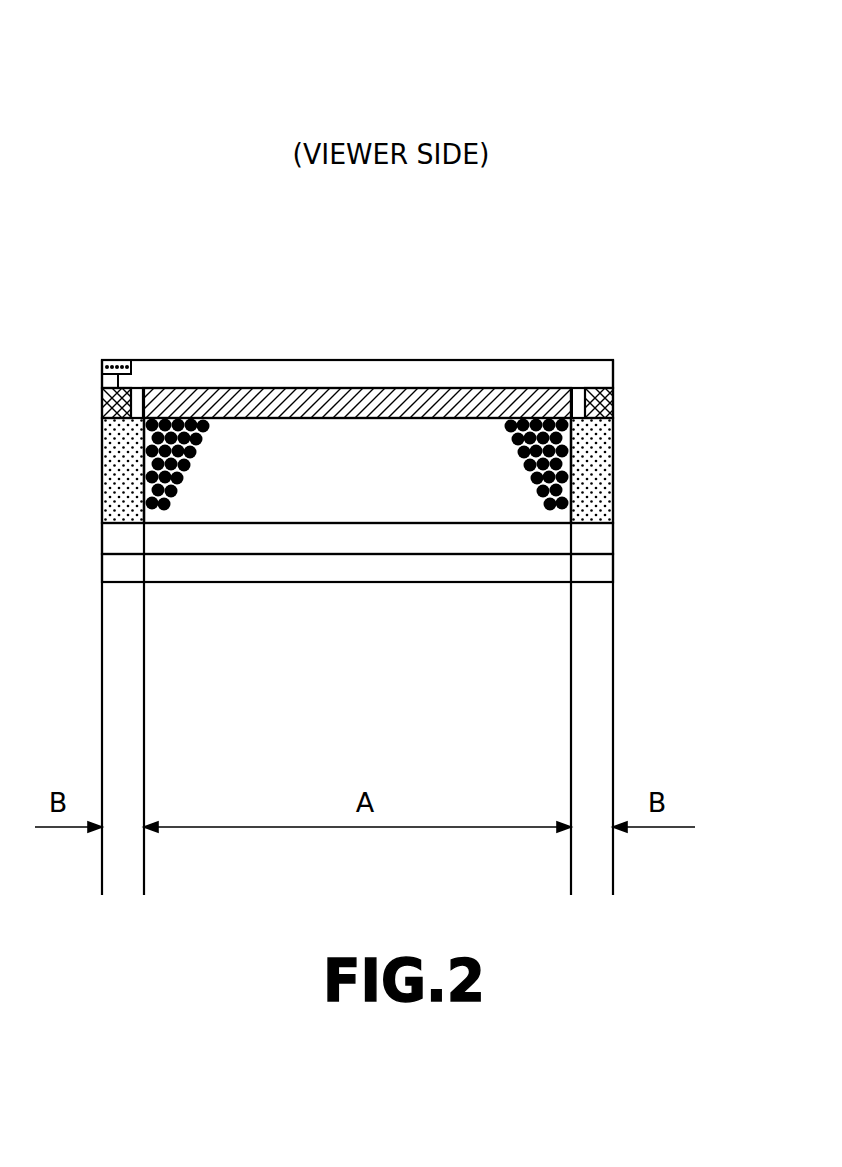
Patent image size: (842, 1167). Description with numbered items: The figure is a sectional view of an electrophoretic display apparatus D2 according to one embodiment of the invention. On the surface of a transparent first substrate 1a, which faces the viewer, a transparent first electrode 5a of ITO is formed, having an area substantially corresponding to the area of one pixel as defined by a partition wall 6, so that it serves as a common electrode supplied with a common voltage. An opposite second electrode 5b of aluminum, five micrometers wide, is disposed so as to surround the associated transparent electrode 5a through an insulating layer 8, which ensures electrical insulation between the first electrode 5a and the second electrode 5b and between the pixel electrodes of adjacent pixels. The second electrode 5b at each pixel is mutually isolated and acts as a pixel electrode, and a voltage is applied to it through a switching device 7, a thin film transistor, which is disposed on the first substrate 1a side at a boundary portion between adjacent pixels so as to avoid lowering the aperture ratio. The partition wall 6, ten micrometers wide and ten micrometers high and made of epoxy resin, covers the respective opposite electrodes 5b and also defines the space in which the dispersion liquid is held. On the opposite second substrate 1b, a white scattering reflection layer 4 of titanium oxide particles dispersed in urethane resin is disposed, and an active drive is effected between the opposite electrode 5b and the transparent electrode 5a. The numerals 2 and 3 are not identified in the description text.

The electrophoretic display apparatus D2 is at (720, 113).
The first substrate 1a is at (335, 368).
The second substrate 1b is at (426, 565).
The liquid crystal layer 2 is at (367, 478).
The spacer beads 3 is at (165, 525).
The reflection layer 4 is at (508, 538).
The first electrode 5a is at (186, 400).
The second electrode 5b is at (613, 403).
The partition wall 6 is at (590, 497).
The switching device 7 is at (122, 360).
The insulating layer 8 is at (137, 418).